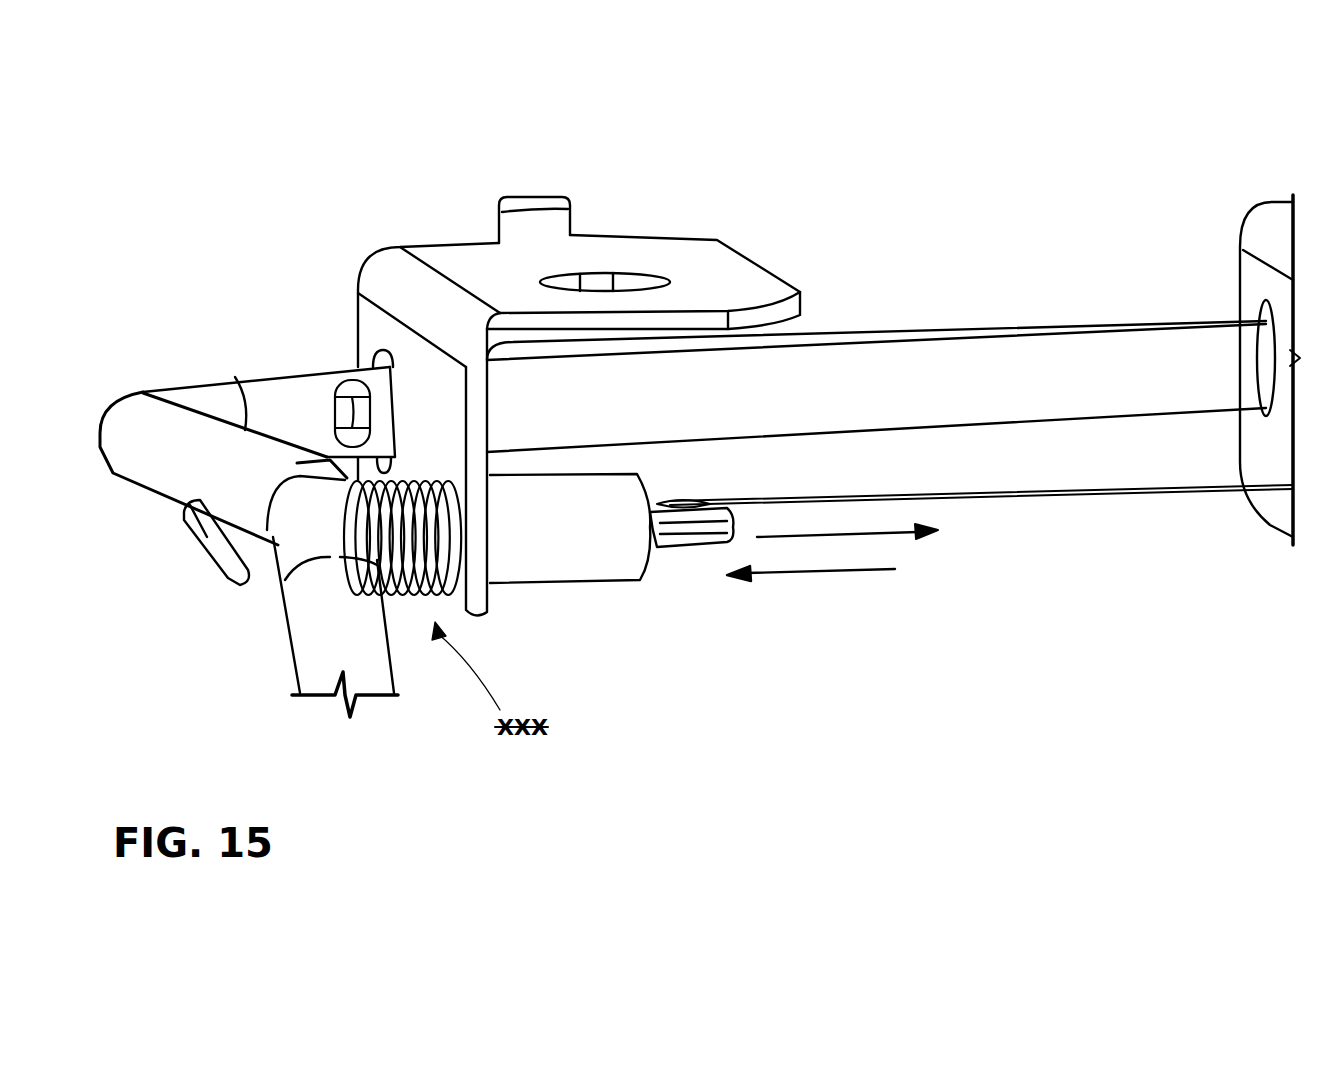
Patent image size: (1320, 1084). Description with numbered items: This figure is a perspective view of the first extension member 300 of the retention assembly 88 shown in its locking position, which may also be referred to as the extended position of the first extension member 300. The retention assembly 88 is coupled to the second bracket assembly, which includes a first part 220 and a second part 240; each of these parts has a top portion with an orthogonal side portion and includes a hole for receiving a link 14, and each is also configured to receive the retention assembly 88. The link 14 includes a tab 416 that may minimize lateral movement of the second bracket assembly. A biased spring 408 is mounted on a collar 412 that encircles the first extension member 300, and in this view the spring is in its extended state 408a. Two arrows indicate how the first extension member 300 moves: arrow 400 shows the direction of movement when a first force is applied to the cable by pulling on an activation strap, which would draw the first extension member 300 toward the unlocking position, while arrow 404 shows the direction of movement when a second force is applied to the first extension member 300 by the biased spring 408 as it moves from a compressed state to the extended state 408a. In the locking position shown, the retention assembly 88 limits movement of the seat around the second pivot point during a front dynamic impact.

The link 14 is at (166, 453).
The retention assembly 88 is at (620, 592).
The first part 220 is at (708, 273).
The second part 240 is at (1262, 235).
The first extension member 300 is at (207, 537).
The arrow 400 is at (880, 533).
The arrow 404 is at (800, 573).
The biased spring 408 is at (437, 483).
The extended state 408a is at (397, 613).
The collar 412 is at (267, 378).
The tab 416 is at (347, 412).